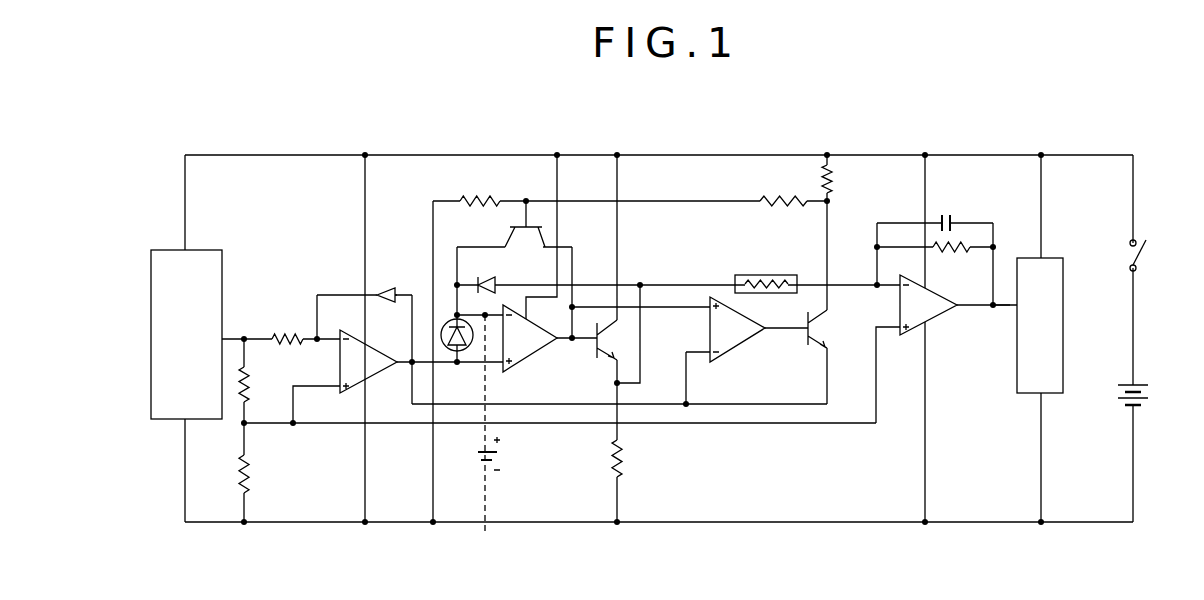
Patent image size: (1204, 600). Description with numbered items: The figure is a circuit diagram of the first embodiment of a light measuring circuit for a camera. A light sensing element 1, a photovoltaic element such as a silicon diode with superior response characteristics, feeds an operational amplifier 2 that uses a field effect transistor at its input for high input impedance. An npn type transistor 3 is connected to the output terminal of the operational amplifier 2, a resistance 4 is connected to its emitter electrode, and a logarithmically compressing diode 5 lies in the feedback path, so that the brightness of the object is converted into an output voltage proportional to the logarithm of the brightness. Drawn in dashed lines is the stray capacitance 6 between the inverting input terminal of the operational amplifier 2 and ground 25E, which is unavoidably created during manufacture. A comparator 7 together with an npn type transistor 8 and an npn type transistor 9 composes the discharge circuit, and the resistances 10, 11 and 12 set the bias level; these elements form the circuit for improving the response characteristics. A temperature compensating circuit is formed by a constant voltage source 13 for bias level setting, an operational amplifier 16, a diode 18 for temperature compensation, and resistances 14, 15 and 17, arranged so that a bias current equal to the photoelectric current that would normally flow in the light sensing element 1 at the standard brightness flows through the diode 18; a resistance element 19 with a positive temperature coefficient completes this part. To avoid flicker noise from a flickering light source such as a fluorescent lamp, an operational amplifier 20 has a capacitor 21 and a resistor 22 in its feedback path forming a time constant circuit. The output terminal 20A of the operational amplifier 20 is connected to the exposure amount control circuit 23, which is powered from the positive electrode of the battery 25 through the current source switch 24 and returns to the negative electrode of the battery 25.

The light sensing element 1 is at (452, 323).
The operational amplifier 2 is at (535, 352).
The npn type transistor 3 is at (603, 338).
The resistance 4 is at (620, 459).
The logarithmically compressing diode 5 is at (488, 280).
The stray capacitance 6 is at (480, 456).
The comparator 7 is at (740, 345).
The npn type transistor 8 is at (812, 330).
The npn type transistor 9 is at (514, 234).
The resistance 10 is at (833, 179).
The resistance 11 is at (783, 196).
The resistance 12 is at (478, 196).
The constant voltage source 13 is at (222, 283).
The resistance 14 is at (255, 384).
The resistance 15 is at (255, 474).
The operational amplifier 16 is at (370, 376).
The resistance 17 is at (287, 334).
The diode 18 is at (386, 288).
The resistance element 19 is at (760, 275).
The operational amplifier 20 is at (928, 320).
The output terminal 20A is at (1003, 307).
The capacitor 21 is at (951, 252).
The resistor 22 is at (946, 214).
The exposure amount control circuit 23 is at (1063, 321).
The current source switch 24 is at (1141, 258).
The battery 25 is at (1148, 394).
The ground 25E is at (478, 533).